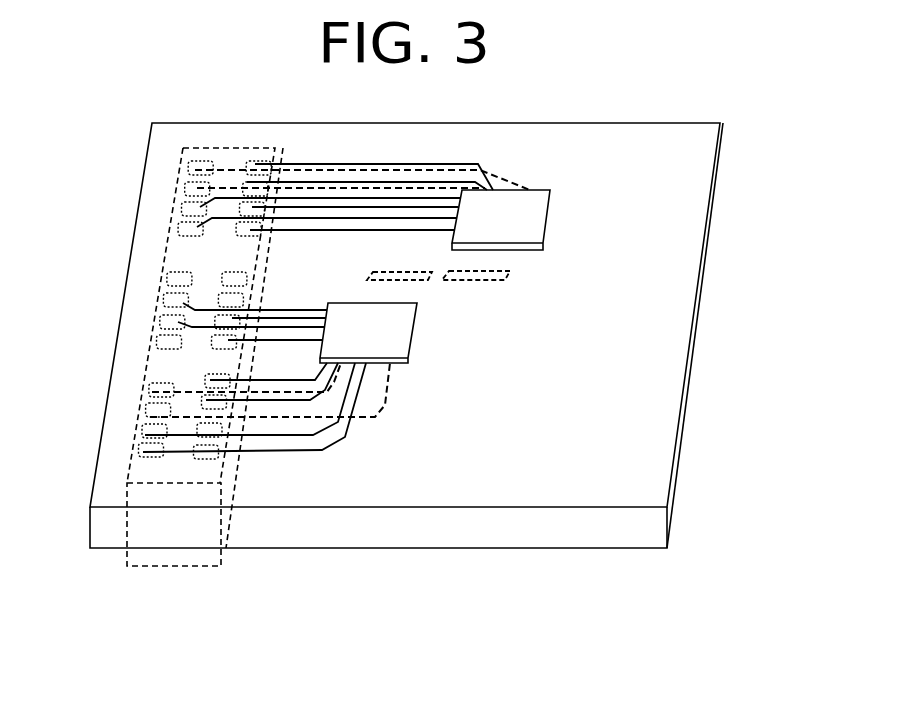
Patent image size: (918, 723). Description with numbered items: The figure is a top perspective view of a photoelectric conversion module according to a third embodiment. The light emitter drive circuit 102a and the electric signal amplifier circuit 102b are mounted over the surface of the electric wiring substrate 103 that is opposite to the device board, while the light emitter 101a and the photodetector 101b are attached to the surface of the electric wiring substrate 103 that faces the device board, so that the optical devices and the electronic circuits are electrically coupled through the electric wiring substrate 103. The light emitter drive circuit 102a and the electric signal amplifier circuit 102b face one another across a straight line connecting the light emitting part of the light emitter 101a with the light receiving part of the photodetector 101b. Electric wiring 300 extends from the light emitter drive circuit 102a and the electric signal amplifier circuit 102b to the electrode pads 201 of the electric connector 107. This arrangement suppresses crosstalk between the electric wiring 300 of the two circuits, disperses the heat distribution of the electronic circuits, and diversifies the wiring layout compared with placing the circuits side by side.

The electric wiring substrate 103 is at (655, 445).
The electrode pads 201 is at (177, 274).
The electric connector 107 is at (143, 528).
The electric wiring 300 is at (440, 164).
The light emitter drive circuit 102a is at (537, 226).
The electric signal amplifier circuit 102b is at (372, 347).
The light emitter 101a is at (480, 283).
The photodetector 101b is at (417, 283).